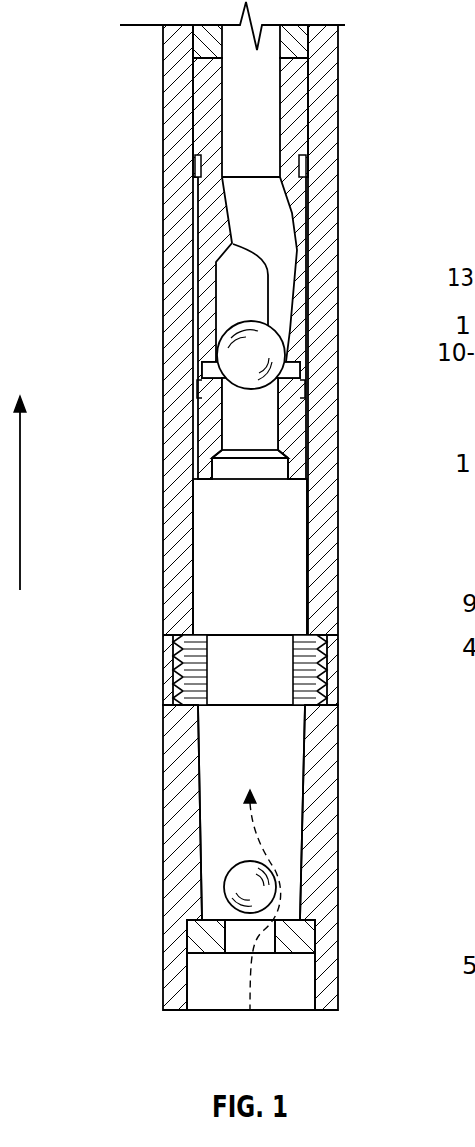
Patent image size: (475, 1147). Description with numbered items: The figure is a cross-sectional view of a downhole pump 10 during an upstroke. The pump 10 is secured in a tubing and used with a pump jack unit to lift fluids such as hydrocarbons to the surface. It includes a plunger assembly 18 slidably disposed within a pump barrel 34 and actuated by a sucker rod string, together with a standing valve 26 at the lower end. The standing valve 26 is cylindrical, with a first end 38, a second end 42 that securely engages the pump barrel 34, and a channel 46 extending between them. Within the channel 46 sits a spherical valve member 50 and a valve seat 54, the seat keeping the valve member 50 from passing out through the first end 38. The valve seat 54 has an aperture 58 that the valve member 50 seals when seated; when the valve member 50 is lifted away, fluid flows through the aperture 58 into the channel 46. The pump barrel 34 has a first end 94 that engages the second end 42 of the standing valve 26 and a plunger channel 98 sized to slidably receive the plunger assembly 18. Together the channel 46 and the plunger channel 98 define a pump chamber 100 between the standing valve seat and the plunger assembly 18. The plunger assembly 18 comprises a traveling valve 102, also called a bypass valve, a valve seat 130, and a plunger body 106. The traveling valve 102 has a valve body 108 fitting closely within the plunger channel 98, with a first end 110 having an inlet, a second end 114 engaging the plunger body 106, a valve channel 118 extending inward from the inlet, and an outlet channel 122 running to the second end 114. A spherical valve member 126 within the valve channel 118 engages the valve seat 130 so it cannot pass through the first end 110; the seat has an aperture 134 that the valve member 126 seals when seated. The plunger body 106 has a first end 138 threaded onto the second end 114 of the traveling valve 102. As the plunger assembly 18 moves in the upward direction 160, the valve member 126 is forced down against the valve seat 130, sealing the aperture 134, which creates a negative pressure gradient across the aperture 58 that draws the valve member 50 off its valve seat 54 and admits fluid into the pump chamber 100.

The downhole pump 10 is at (385, 147).
The plunger assembly 18 is at (309, 202).
The standing valve 26 is at (338, 756).
The pump barrel 34 is at (322, 543).
The first end of standing valve 38 is at (313, 988).
The second end of standing valve 42 is at (177, 102).
The channel of standing valve 46 is at (301, 785).
The spherical valve member of standing valve 50 is at (243, 862).
The valve seat of standing valve 54 is at (188, 932).
The aperture of valve seat 58 is at (231, 950).
The first end of pump barrel 94 is at (176, 657).
The plunger channel 98 is at (193, 540).
The pump chamber 100 is at (307, 588).
The traveling valve 102 is at (314, 320).
The plunger body 106 is at (308, 72).
The valve body 108 is at (318, 368).
The first end of valve body 110 is at (306, 387).
The second end of valve body 114 is at (312, 120).
The valve channel 118 is at (218, 335).
The outlet channel 122 is at (300, 253).
The spherical valve member of traveling valve 126 is at (232, 327).
The valve seat of traveling valve 130 is at (307, 428).
The aperture of traveling valve seat 134 is at (250, 480).
The first end of plunger body 138 is at (177, 172).
The upward direction 160 is at (22, 493).